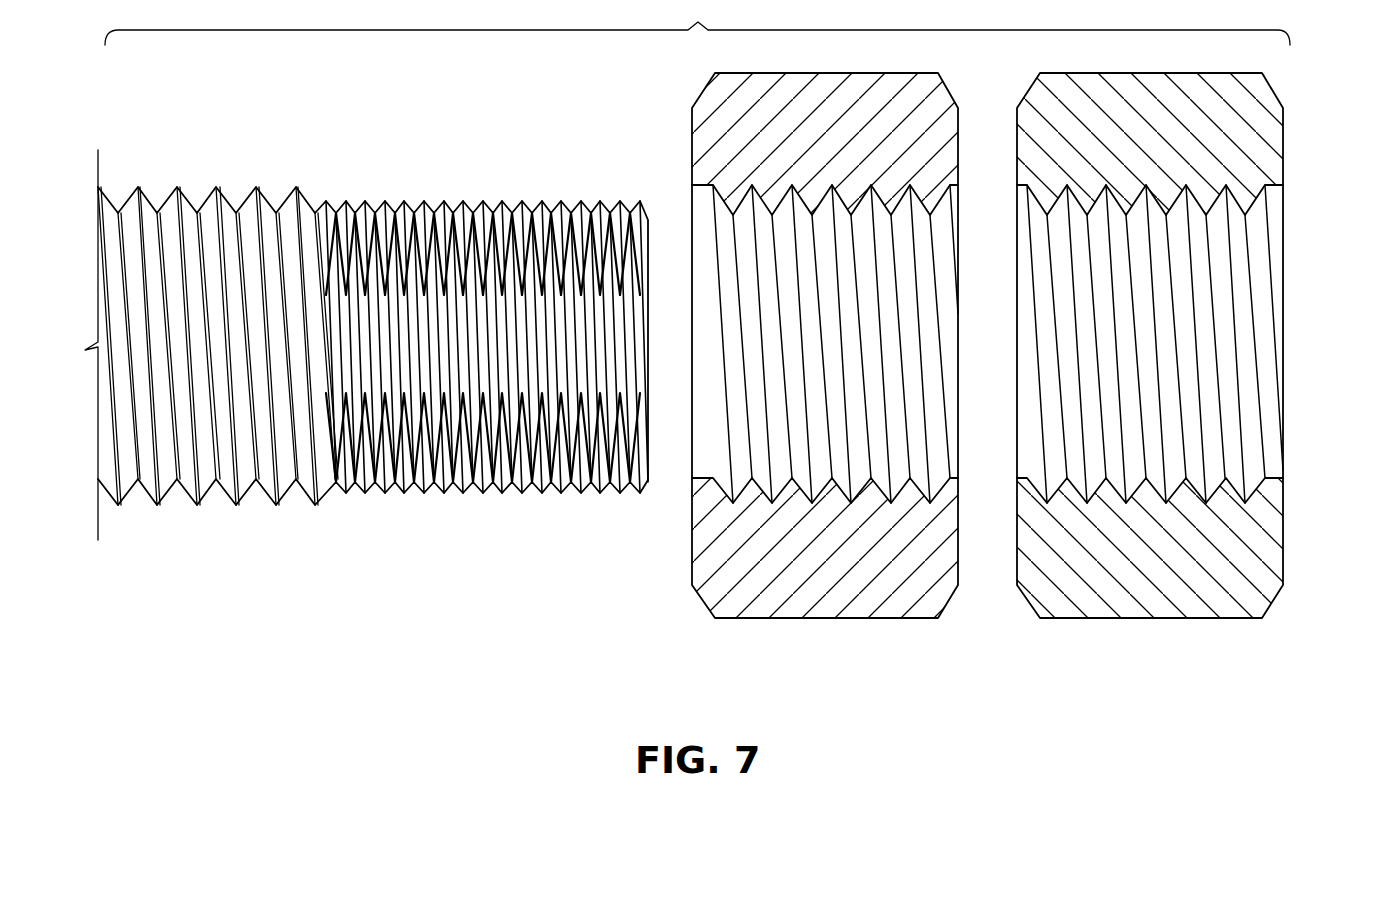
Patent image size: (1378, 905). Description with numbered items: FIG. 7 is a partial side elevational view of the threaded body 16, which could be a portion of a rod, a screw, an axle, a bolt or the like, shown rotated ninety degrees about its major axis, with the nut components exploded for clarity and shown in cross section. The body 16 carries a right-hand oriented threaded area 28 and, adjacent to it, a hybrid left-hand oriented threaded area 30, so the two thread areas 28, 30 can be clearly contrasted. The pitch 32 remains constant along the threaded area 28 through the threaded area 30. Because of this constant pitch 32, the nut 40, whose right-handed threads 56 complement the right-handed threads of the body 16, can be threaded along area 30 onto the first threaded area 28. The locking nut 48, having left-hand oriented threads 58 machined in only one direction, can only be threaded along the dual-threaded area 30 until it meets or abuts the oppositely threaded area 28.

The threaded body 16 is at (366, 344).
The first threaded area 28 is at (100, 167).
The second threaded area 30 is at (330, 160).
The pitch 32 is at (273, 428).
The nut 40 is at (775, 391).
The locking nut 48 is at (1184, 391).
The right-handed threads 56 is at (700, 476).
The left-hand oriented threads 58 is at (1255, 245).